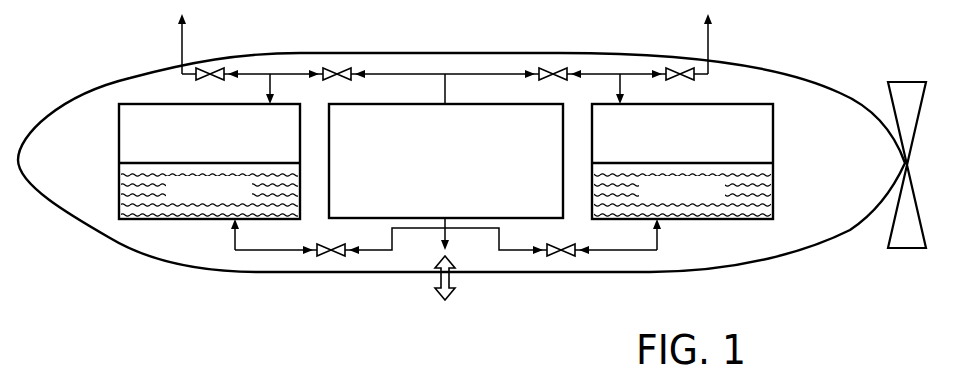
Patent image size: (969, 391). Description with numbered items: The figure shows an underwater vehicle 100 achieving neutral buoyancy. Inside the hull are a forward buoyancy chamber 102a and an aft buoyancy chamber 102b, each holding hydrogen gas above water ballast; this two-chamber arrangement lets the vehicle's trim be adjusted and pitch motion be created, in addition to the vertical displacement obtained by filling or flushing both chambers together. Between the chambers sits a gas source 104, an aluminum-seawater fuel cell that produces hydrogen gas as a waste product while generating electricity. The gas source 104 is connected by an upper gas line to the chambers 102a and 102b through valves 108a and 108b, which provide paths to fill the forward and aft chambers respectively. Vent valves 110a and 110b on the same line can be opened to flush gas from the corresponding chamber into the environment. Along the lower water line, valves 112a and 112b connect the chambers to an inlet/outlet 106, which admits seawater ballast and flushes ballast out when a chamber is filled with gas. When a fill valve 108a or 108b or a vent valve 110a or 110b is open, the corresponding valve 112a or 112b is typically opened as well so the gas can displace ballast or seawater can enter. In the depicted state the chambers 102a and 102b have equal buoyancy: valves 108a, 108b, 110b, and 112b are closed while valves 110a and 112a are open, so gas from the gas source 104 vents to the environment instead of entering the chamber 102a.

The underwater vehicle 100 is at (797, 68).
The forward buoyancy chamber 102a is at (119, 144).
The aft buoyancy chamber 102b is at (773, 144).
The gas source 104 is at (398, 103).
The inlet/outlet 106 is at (450, 295).
The valve 108a is at (338, 67).
The valve 108b is at (546, 67).
The valve 110a is at (214, 67).
The valve 110b is at (678, 67).
The valve 112a is at (332, 257).
The valve 112b is at (560, 257).